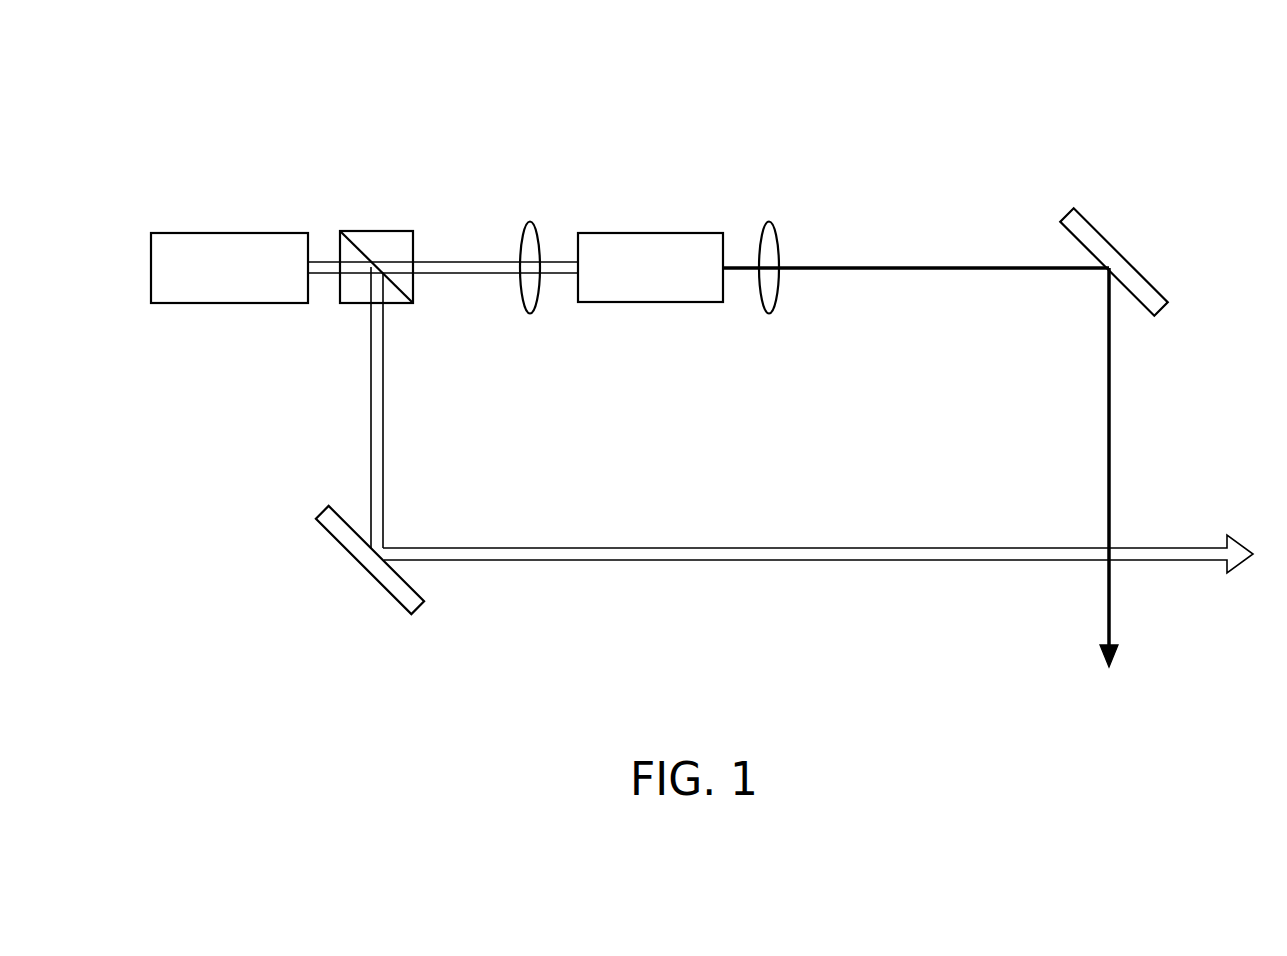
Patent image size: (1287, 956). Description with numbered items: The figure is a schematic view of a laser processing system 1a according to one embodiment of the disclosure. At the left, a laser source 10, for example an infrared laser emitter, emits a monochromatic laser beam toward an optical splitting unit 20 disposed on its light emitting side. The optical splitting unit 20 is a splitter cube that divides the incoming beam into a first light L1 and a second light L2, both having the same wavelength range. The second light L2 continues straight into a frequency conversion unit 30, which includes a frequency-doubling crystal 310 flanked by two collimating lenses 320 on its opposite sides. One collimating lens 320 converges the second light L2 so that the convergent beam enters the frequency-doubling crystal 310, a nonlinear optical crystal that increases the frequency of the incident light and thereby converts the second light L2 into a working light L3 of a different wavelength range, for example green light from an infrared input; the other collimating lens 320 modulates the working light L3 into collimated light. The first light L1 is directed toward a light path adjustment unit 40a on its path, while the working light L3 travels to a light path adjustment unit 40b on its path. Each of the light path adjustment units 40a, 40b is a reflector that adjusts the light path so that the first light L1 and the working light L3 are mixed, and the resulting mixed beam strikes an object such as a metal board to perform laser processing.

The laser processing system 1a is at (200, 101).
The laser source 10 is at (229, 232).
The optical splitting unit 20 is at (377, 231).
The frequency conversion unit 30 is at (502, 158).
The frequency-doubling crystal 310 is at (651, 233).
The collimating lens 320 is at (530, 221).
The light path adjustment unit 40a is at (380, 585).
The light path adjustment unit 40b is at (1140, 270).
The first light L1 is at (371, 412).
The second light L2 is at (468, 262).
The working light L3 is at (867, 265).